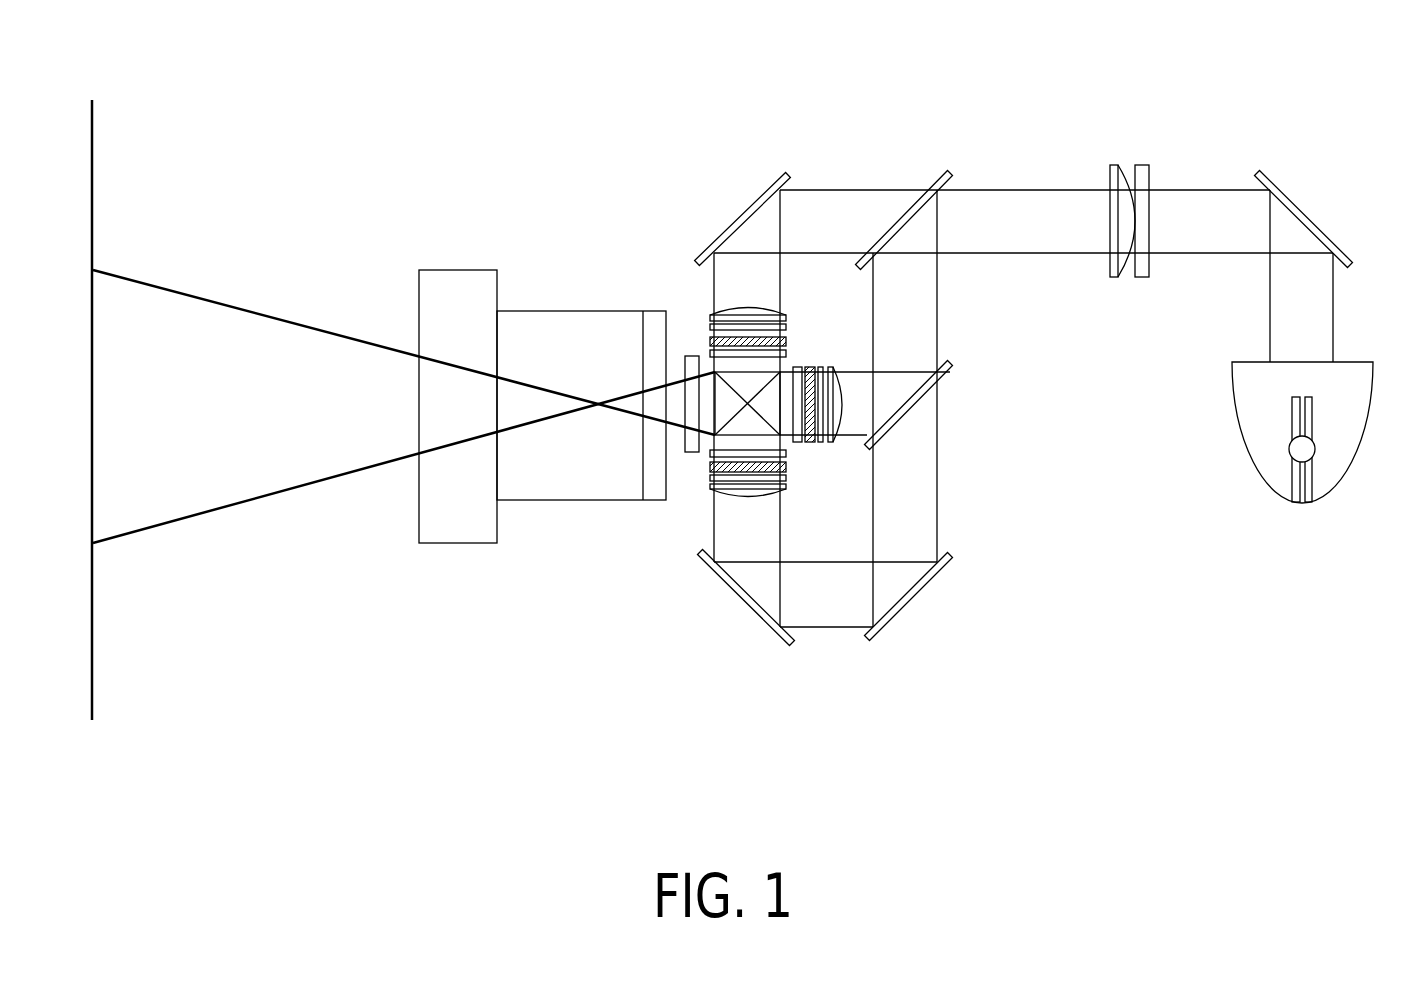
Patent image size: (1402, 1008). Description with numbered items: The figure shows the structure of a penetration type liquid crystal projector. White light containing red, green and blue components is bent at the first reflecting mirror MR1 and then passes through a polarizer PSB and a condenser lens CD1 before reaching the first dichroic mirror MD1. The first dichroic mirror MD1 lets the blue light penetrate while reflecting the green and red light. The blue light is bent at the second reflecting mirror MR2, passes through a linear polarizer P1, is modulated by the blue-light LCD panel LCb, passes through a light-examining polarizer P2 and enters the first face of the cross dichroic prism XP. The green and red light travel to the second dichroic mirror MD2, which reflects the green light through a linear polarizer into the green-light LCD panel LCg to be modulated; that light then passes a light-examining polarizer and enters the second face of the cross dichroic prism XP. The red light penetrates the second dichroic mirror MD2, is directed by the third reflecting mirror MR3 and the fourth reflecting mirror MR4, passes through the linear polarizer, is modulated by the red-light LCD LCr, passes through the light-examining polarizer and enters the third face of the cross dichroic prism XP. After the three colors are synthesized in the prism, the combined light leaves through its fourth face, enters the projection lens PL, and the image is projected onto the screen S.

The screen S is at (92, 203).
The projection lens PL is at (553, 345).
The cross dichroic prism XP is at (720, 420).
The blue-light LCD panel LCb is at (811, 280).
The green-light LCD panel LCg is at (823, 443).
The red-light LCD LCr is at (710, 452).
The linear polarizer P1 is at (785, 325).
The light-examining polarizer P2 is at (785, 352).
The first reflecting mirror MR1 is at (1305, 205).
The second reflecting mirror MR2 is at (745, 215).
The third reflecting mirror MR3 is at (900, 608).
The fourth reflecting mirror MR4 is at (740, 598).
The first dichroic mirror MD1 is at (900, 220).
The second dichroic mirror MD2 is at (907, 418).
The condenser lens CD1 is at (1115, 200).
The polarizer PSB is at (1140, 178).